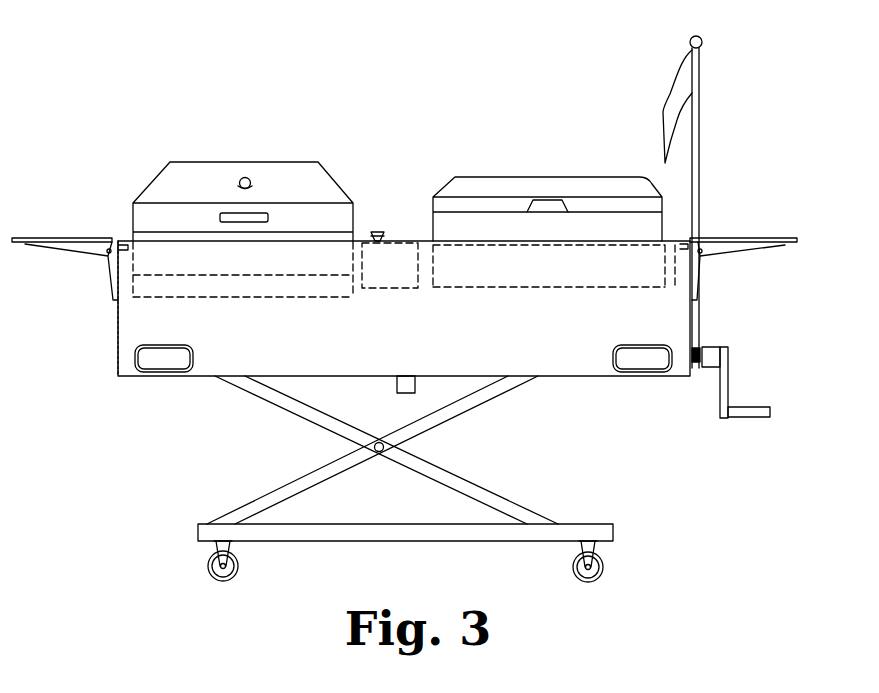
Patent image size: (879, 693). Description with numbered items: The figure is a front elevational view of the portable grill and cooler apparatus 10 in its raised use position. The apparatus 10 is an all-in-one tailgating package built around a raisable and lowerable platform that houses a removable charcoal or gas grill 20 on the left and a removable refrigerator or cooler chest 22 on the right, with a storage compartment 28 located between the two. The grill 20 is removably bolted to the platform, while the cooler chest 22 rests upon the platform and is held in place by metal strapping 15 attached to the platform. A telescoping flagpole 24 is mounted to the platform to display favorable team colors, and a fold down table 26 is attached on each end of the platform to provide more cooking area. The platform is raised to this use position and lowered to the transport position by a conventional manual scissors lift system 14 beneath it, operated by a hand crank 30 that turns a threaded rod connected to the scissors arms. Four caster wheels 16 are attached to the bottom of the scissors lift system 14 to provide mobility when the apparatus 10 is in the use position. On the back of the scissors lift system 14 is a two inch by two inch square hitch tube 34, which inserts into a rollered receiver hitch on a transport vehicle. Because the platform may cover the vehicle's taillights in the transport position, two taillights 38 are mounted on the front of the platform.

The portable grill and cooler apparatus 10 is at (388, 112).
The scissors lift system 14 is at (260, 438).
The metal strapping 15 is at (422, 288).
The caster wheels 16 is at (207, 572).
The grill 20 is at (243, 181).
The cooler chest 22 is at (538, 184).
The telescoping flagpole 24 is at (700, 153).
The fold down table 26 is at (63, 238).
The storage compartment 28 is at (398, 215).
The hand crank 30 is at (728, 388).
The square hitch tube 34 is at (405, 393).
The taillights 38 is at (176, 352).